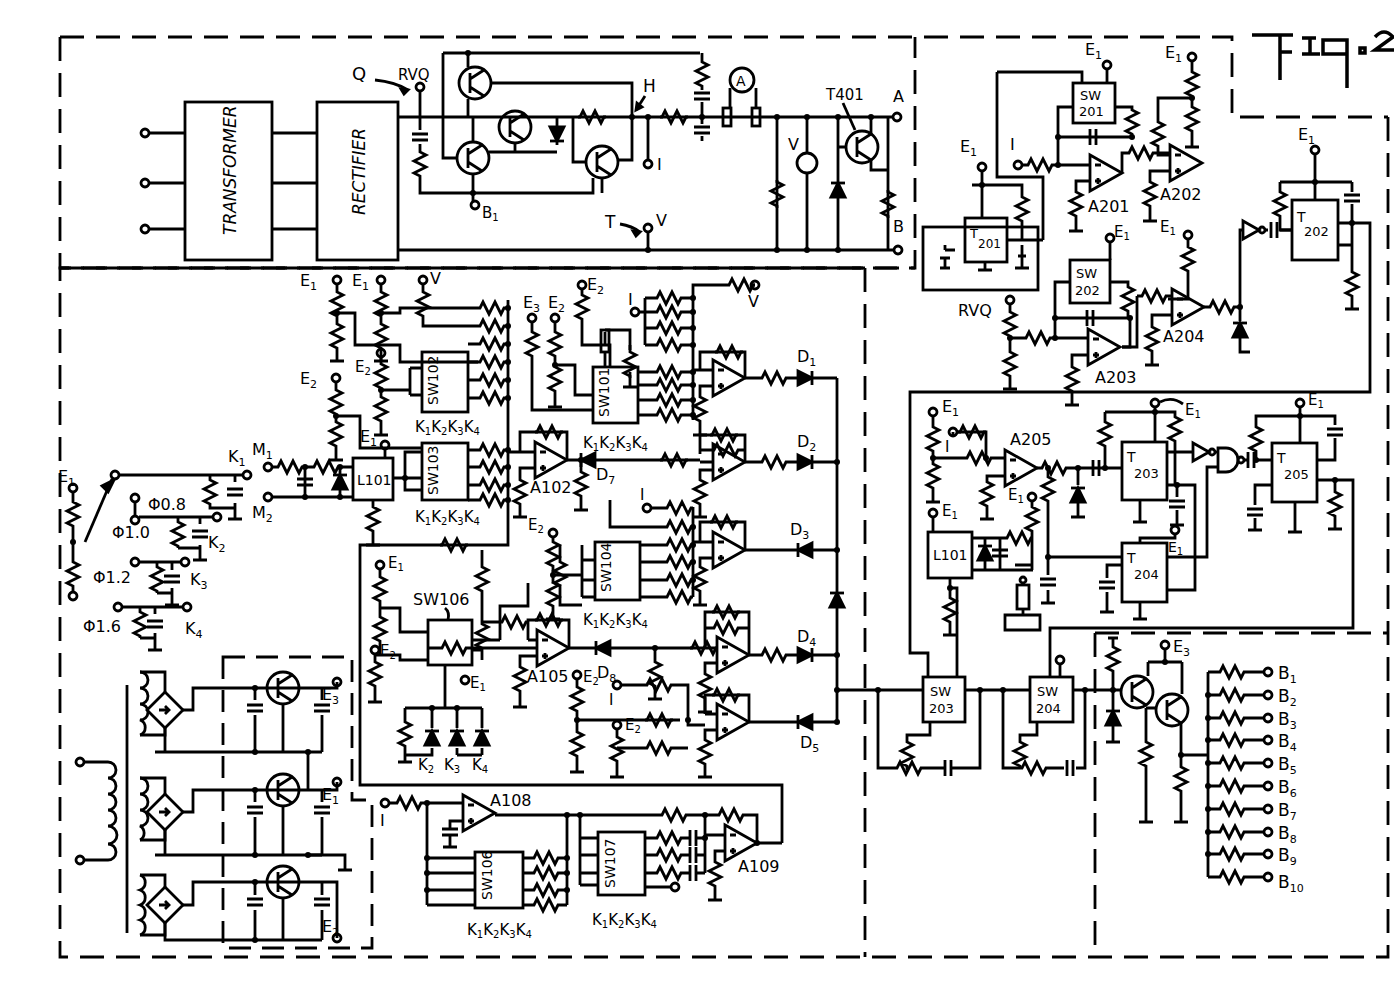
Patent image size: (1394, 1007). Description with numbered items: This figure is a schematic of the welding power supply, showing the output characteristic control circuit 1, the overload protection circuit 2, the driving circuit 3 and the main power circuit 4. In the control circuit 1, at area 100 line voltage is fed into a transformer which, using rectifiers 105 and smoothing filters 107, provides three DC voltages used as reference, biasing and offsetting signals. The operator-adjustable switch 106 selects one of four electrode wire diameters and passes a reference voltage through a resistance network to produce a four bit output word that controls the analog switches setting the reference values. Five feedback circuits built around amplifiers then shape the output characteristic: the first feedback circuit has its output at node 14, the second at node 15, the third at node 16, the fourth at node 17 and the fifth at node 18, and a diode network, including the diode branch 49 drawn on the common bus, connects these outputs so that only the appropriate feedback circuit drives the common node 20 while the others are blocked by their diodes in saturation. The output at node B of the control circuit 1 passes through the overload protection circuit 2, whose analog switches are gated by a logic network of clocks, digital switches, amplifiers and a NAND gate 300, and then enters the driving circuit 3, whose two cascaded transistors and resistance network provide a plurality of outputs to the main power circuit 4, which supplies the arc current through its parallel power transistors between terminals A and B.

The output characteristic control circuit 1 is at (462, 287).
The overload protection circuit 2 is at (724, 537).
The driving circuit 3 is at (1241, 795).
The main power circuit 4 is at (724, 152).
The node 14 is at (748, 382).
The node 15 is at (748, 466).
The node 16 is at (748, 553).
The node 17 is at (748, 658).
The node 18 is at (749, 723).
The node 20 is at (837, 690).
The summing bus with diode D6 49 is at (832, 580).
The area 100 is at (95, 866).
The rectifiers 105 is at (165, 793).
The switch 106 is at (111, 468).
The smoothing filters 107 is at (297, 790).
The NAND gate 300 is at (1242, 232).